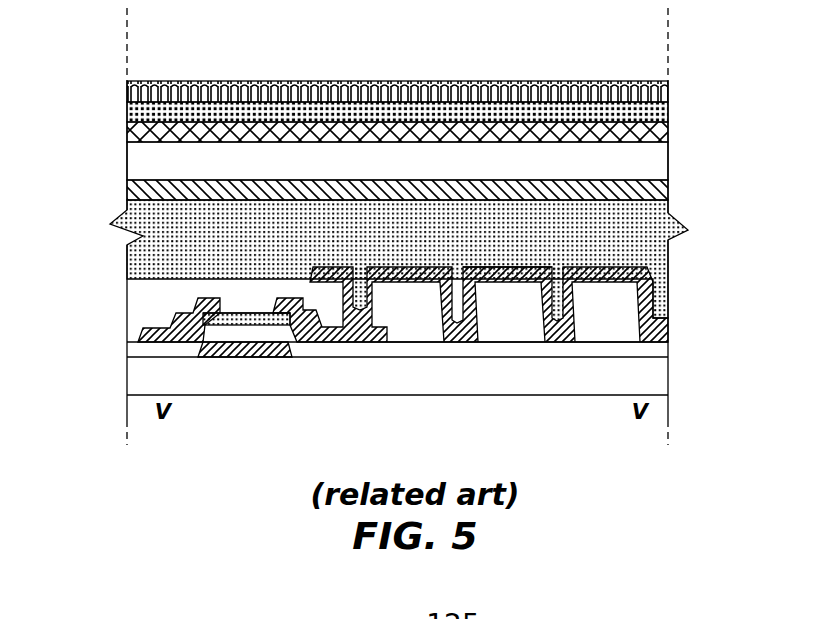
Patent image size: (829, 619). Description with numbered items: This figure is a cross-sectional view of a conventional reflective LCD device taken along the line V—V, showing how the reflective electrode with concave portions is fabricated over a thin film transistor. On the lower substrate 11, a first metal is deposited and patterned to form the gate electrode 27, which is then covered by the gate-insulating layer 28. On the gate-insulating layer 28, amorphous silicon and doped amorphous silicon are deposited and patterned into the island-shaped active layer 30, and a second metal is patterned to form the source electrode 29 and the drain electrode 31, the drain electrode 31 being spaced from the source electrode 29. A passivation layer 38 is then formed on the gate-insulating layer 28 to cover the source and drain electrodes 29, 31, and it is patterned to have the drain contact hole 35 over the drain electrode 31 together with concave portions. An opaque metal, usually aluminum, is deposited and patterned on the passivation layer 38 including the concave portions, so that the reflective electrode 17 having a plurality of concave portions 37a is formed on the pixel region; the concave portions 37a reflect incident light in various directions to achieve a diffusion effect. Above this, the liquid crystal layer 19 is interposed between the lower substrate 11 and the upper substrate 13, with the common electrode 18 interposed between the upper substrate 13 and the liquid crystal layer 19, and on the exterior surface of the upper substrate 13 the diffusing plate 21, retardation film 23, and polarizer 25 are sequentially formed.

The lower substrate 11 is at (368, 391).
The upper substrate 13 is at (653, 167).
The reflective electrode 17 is at (504, 264).
The common electrode 18 is at (663, 193).
The liquid crystal layer 19 is at (653, 218).
The diffusing plate 21 is at (668, 137).
The retardation film 23 is at (658, 118).
The polarizer 25 is at (663, 92).
The gate electrode 27 is at (257, 353).
The gate-insulating layer 28 is at (657, 353).
The source electrode 29 is at (198, 298).
The active layer 30 is at (243, 311).
The drain electrode 31 is at (247, 311).
The drain contact hole 35 is at (360, 264).
The concave portions 37a is at (559, 264).
The passivation layer 38 is at (667, 313).